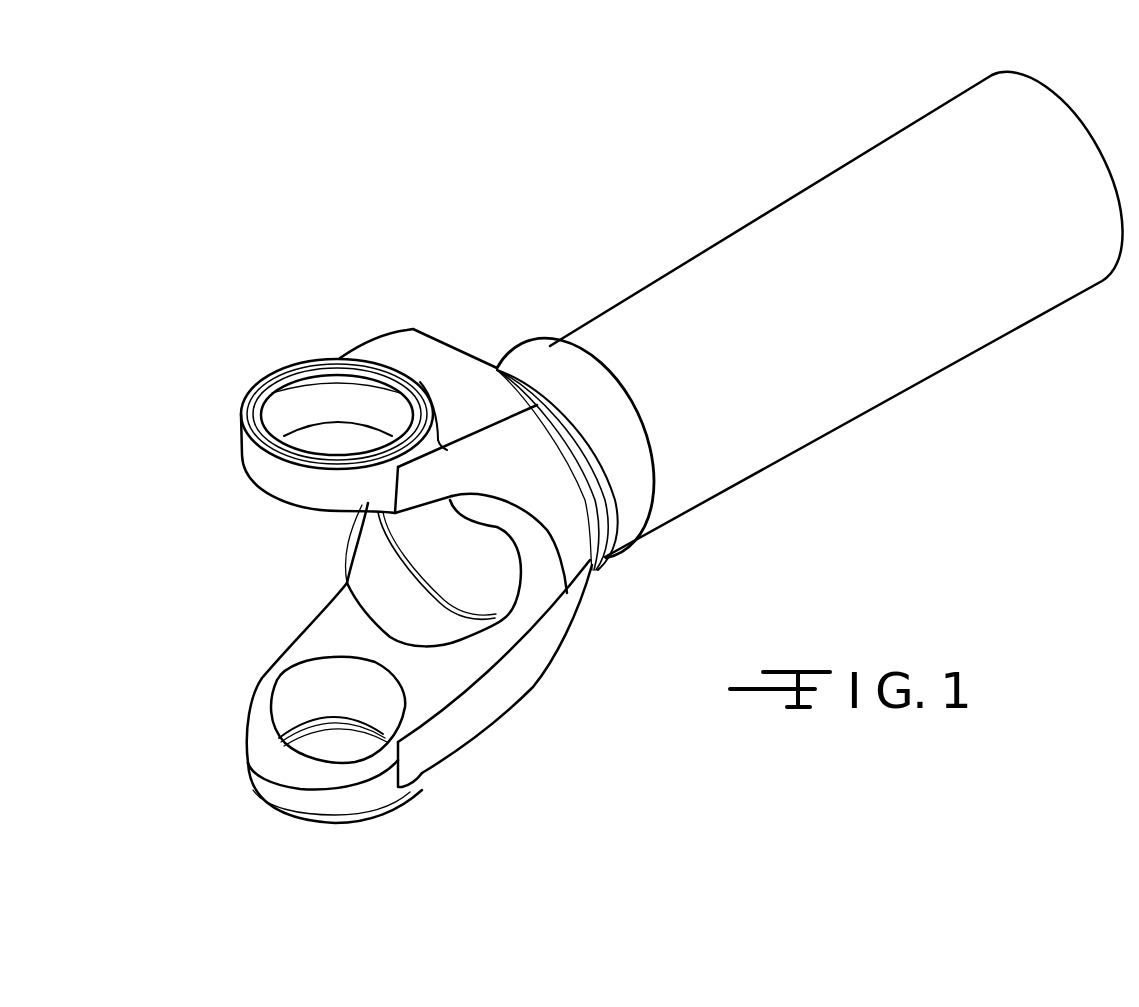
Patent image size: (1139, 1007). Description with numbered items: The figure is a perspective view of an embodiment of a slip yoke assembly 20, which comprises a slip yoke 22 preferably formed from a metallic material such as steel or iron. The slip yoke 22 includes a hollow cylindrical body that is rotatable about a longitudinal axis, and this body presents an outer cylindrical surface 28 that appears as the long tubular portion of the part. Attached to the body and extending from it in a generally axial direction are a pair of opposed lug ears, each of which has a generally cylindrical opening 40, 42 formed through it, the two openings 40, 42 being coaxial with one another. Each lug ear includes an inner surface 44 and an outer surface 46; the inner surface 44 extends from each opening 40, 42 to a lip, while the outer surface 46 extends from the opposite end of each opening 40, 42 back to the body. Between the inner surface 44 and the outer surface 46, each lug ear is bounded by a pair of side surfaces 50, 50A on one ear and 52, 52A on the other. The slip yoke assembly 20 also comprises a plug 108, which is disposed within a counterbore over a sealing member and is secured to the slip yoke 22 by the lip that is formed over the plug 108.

The slip yoke assembly 20 is at (526, 292).
The slip yoke 22 is at (813, 415).
The outer cylindrical surface 28 is at (648, 300).
The outer surface 46 is at (583, 600).
The inner surface 44 is at (513, 615).
The side surface 50 is at (490, 456).
The side surface 50A is at (308, 361).
The cylindrical opening 40 is at (337, 415).
The side surface 52 is at (457, 722).
The side surface 52A is at (293, 640).
The cylindrical opening 42 is at (342, 757).
The plug 108 is at (462, 558).